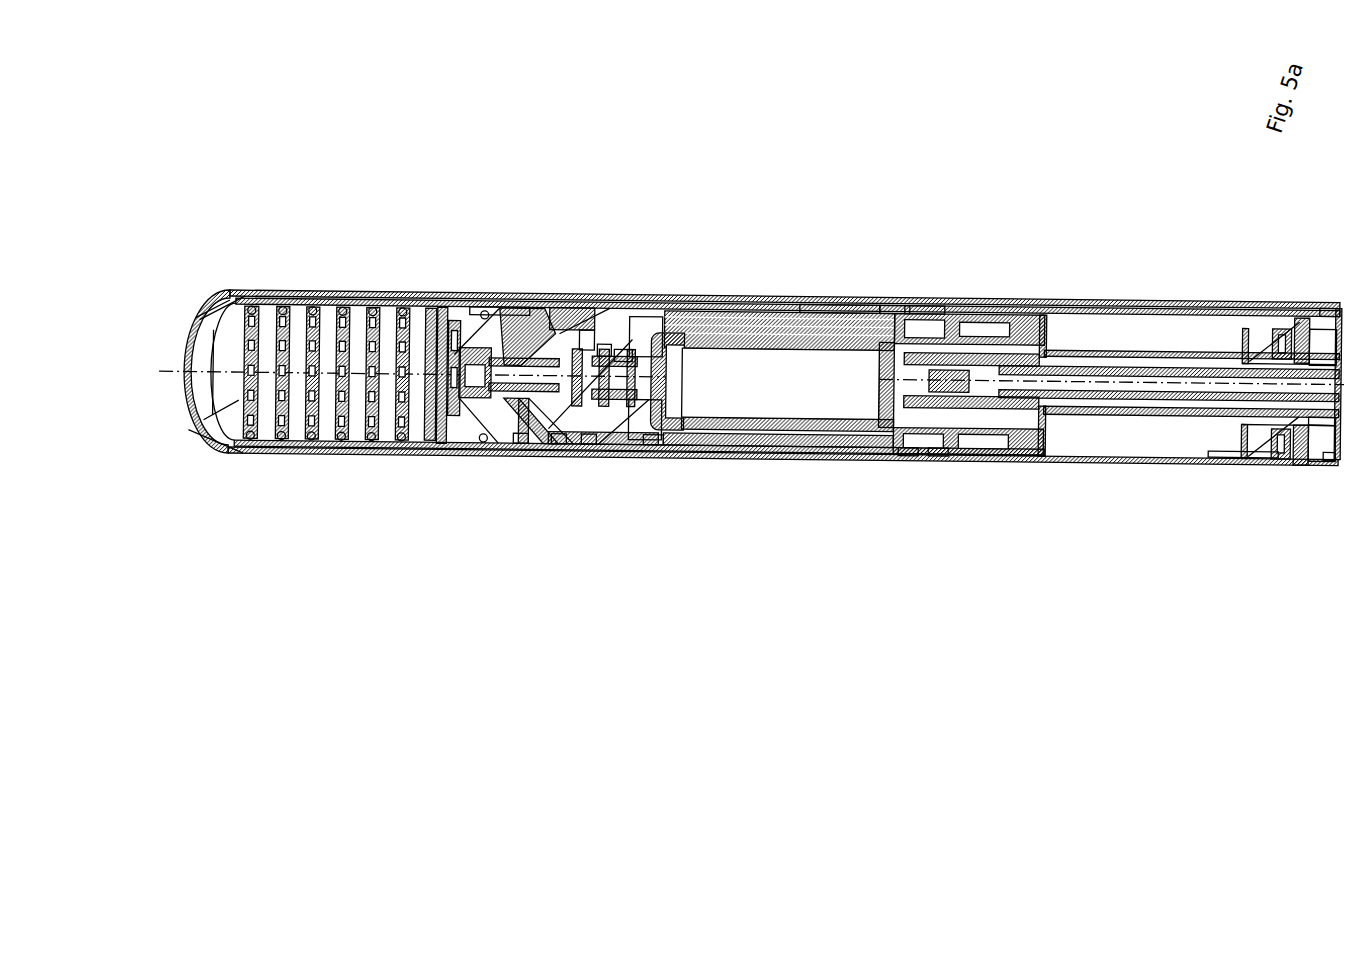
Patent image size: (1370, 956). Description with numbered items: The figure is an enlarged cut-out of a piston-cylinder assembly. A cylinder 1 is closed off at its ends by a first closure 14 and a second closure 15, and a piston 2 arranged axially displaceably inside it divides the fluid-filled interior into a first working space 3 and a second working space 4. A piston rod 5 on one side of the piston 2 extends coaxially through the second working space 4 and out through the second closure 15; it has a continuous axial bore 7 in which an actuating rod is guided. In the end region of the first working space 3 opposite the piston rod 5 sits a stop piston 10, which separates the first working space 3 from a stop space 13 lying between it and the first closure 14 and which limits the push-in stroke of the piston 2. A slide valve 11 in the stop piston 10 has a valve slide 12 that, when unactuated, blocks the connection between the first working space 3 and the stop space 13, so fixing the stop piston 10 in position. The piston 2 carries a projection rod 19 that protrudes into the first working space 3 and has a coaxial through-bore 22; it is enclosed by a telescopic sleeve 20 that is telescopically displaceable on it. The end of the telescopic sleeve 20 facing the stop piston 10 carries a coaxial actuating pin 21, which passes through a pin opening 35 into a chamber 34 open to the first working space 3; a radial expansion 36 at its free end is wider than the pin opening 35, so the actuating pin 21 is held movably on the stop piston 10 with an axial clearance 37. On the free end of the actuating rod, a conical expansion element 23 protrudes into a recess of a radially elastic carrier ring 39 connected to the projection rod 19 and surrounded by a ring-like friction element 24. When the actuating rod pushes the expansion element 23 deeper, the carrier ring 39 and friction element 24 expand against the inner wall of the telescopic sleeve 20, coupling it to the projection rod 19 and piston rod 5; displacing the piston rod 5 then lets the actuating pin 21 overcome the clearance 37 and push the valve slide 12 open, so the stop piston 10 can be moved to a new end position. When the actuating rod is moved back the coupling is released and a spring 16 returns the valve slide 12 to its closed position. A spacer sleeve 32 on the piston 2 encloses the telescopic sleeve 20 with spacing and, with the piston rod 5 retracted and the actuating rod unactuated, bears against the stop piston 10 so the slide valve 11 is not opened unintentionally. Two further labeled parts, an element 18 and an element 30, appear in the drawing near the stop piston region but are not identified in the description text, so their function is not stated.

The cylinder 1 is at (1218, 295).
The piston 2 is at (1262, 455).
The first working space 3 is at (655, 455).
The second working space 4 is at (1321, 407).
The piston rod 5 is at (1335, 455).
The axial bore 7 is at (1340, 290).
The stop piston 10 is at (493, 300).
The slide valve 11 is at (525, 400).
The valve slide 12 is at (338, 455).
The stop space 13 is at (221, 338).
The first closure 14 is at (203, 450).
The second closure 15 is at (561, 455).
The spring 16 is at (523, 455).
The plunger rod wall 18 is at (1203, 400).
The projection rod 19 is at (1162, 413).
The telescopic sleeve 20 is at (766, 458).
The actuating pin 21 is at (655, 360).
The through-bore 22 is at (1180, 370).
The expansion element 23 is at (939, 455).
The friction element 24 is at (918, 292).
The clutch member 30 is at (910, 455).
The spacer sleeve 32 is at (838, 292).
The chamber 34 is at (590, 455).
The pin opening 35 is at (624, 350).
The radial expansion 36 is at (604, 345).
The axial clearance 37 is at (587, 330).
The carrier ring 39 is at (890, 292).